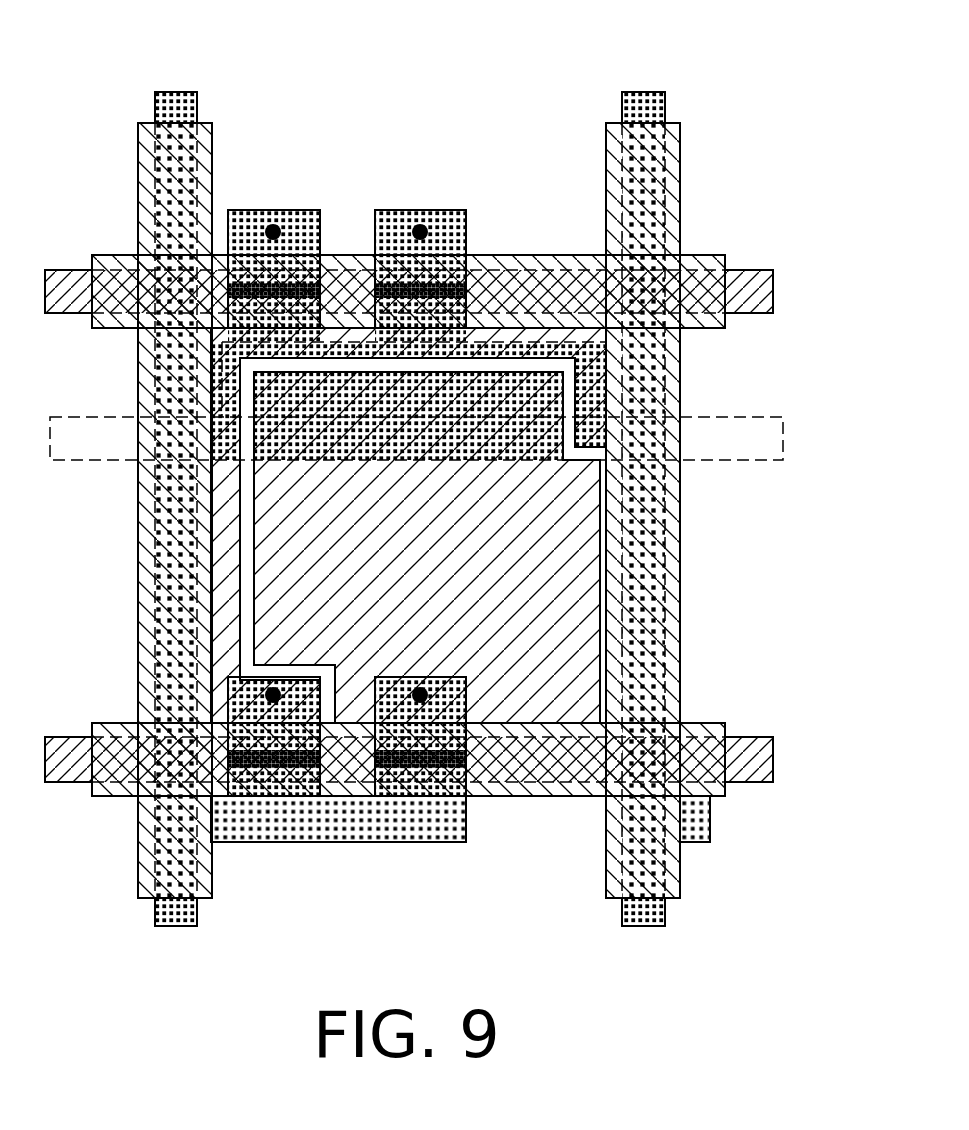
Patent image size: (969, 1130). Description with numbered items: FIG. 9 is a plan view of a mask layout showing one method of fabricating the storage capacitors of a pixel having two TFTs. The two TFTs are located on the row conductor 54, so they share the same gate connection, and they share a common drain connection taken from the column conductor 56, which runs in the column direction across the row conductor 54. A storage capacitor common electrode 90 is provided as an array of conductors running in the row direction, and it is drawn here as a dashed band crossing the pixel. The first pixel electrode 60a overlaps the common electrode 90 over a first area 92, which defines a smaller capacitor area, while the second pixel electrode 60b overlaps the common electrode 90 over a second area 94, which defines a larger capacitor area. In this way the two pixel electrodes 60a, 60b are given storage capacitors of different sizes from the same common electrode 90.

The row conductor 54 is at (775, 757).
The column conductor 56 is at (175, 92).
The first pixel electrode 60a is at (225, 578).
The second pixel electrode 60b is at (552, 598).
The storage capacitor common electrode 90 is at (769, 440).
The first area 92 is at (590, 386).
The second area 94 is at (405, 432).